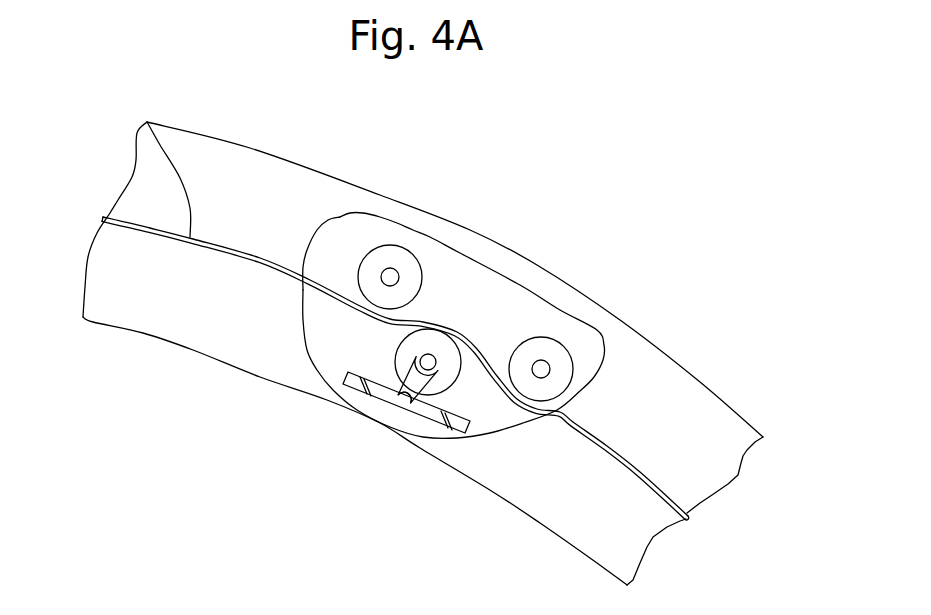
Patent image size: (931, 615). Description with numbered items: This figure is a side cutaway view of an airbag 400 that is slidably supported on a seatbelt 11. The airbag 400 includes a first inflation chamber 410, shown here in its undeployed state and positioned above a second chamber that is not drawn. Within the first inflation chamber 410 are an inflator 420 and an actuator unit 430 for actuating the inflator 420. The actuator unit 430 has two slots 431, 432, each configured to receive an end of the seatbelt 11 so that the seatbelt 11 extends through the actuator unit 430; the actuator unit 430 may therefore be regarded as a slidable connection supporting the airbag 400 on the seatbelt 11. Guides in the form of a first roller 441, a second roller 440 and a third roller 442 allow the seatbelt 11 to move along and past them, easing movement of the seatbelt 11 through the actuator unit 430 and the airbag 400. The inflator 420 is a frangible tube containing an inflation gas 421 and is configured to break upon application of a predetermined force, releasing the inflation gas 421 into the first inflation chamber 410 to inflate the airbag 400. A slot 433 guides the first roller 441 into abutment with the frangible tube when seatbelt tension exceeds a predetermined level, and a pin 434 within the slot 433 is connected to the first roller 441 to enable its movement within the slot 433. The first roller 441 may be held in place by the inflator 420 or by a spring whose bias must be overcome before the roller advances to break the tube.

The seatbelt 11 is at (148, 122).
The airbag 400 is at (500, 207).
The first inflation chamber 410 is at (247, 195).
The inflator 420 is at (385, 397).
The inflation gas 421 is at (413, 406).
The actuator unit 430 is at (502, 308).
The slot 431 is at (307, 250).
The slot 432 is at (560, 413).
The slot 433 is at (437, 373).
The pin 434 is at (401, 402).
The second roller 440 is at (399, 257).
The first roller 441 is at (401, 352).
The third roller 442 is at (557, 358).